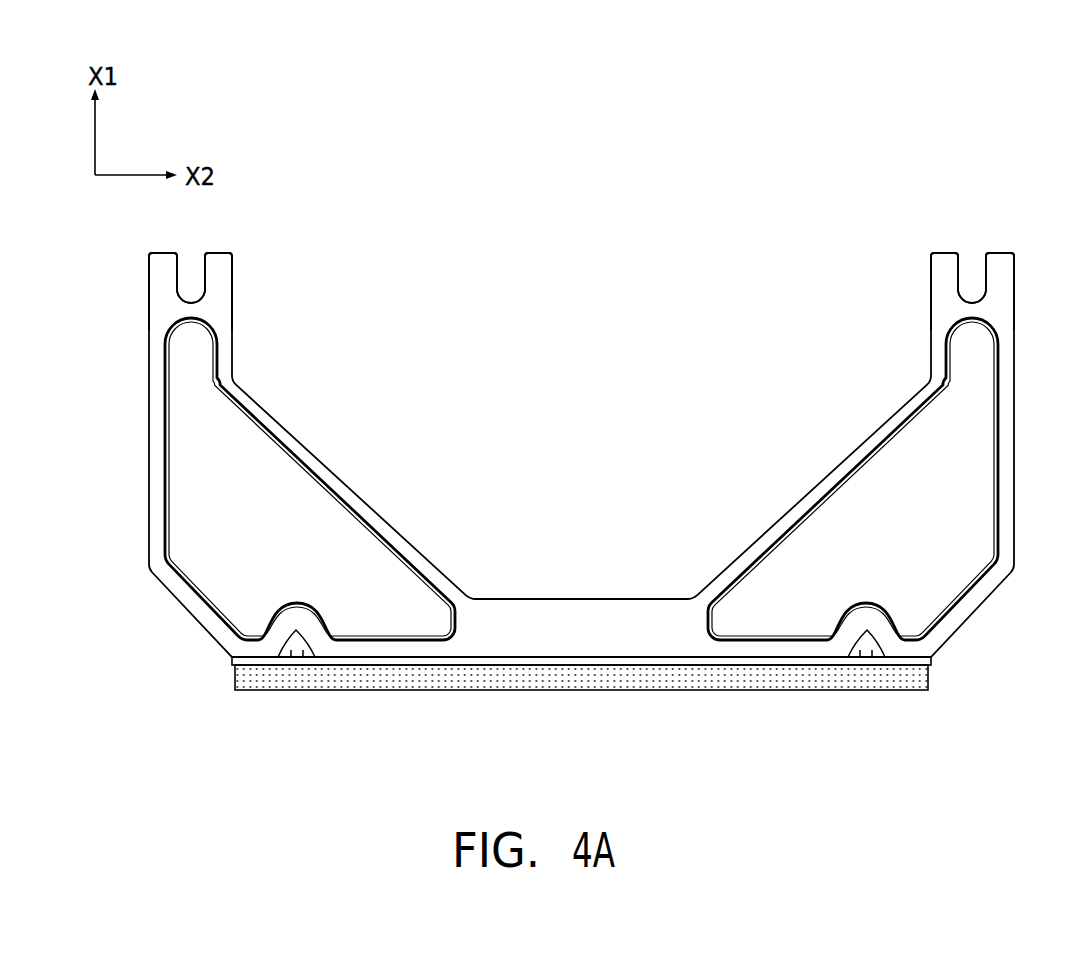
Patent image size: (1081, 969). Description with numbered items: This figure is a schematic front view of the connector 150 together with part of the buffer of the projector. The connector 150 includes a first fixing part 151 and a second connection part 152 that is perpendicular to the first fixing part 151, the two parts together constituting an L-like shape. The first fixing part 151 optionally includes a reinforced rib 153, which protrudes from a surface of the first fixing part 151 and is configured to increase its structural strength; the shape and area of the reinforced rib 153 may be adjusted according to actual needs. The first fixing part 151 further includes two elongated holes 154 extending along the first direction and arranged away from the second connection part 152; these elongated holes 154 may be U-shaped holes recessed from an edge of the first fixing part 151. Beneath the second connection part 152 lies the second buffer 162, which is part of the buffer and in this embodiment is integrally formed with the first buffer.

The connector 150 is at (146, 625).
The first fixing part 151 is at (579, 627).
The second connection part 152 is at (932, 659).
The reinforced rib 153 is at (860, 543).
The elongated hole 154 is at (563, 129).
The second buffer 162 is at (584, 677).